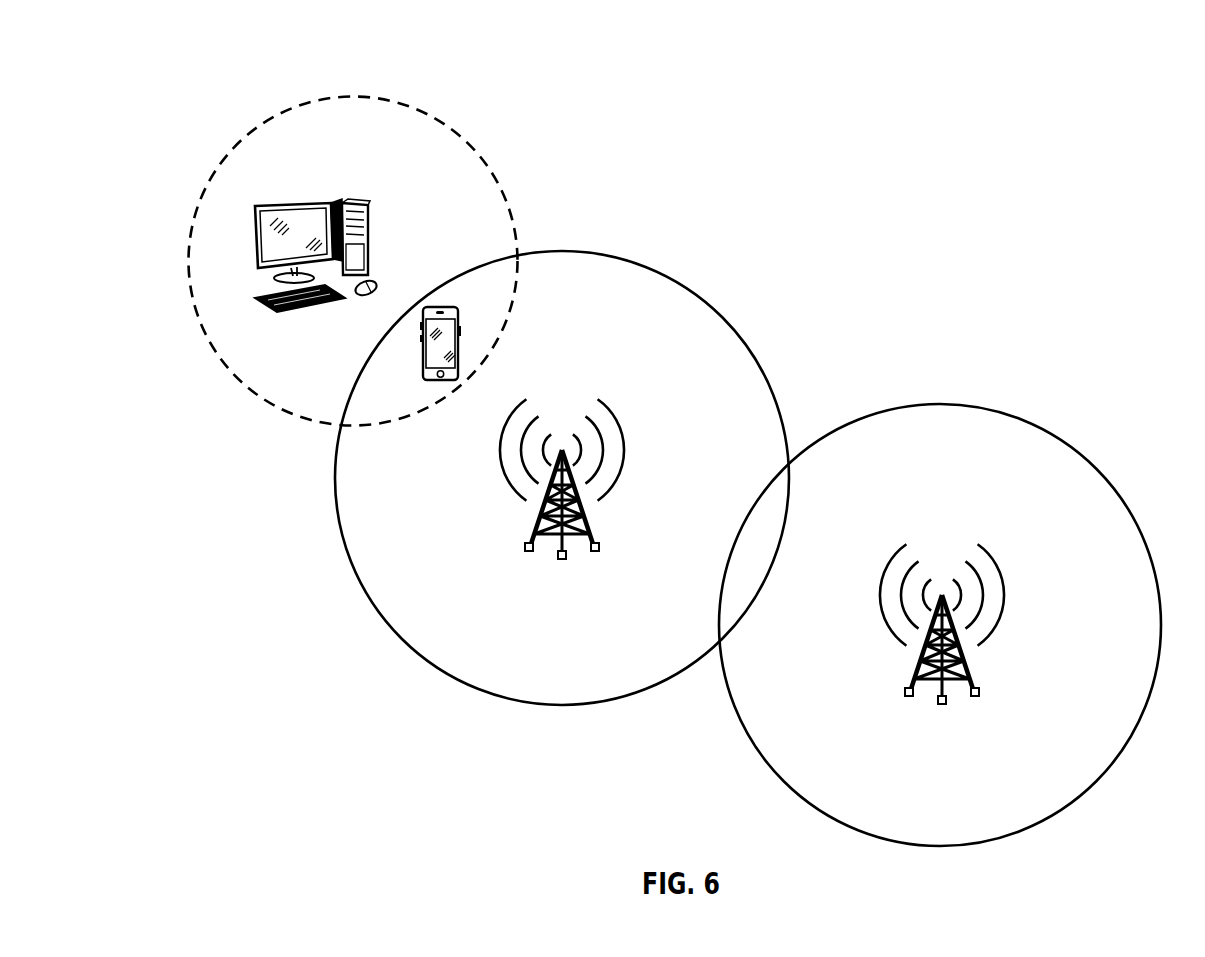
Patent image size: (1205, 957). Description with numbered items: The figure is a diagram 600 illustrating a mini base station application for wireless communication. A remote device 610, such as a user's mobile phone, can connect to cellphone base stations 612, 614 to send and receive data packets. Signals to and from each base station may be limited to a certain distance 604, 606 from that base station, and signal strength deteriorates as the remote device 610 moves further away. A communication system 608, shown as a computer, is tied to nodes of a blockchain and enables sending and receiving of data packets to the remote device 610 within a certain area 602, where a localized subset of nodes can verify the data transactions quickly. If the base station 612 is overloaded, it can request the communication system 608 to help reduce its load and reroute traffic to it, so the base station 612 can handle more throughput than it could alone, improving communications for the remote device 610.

The diagram 600 is at (216, 56).
The certain area 602 is at (237, 149).
The certain distance 604 is at (715, 304).
The certain distance 606 is at (1033, 424).
The communication system 608 is at (293, 208).
The remote device 610 is at (440, 306).
The cellphone base station 612 is at (562, 450).
The cellphone base station 614 is at (942, 595).